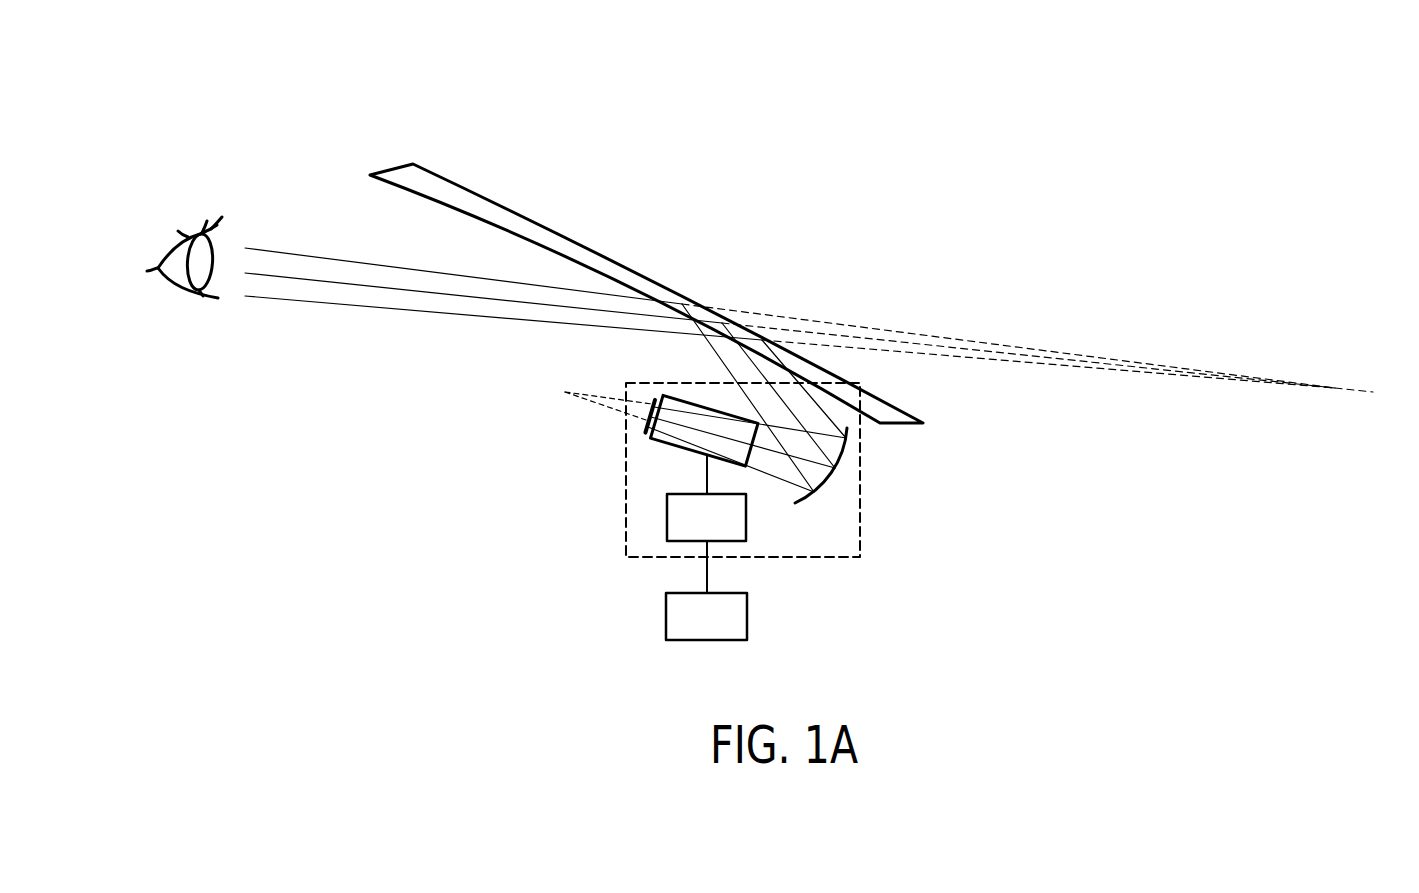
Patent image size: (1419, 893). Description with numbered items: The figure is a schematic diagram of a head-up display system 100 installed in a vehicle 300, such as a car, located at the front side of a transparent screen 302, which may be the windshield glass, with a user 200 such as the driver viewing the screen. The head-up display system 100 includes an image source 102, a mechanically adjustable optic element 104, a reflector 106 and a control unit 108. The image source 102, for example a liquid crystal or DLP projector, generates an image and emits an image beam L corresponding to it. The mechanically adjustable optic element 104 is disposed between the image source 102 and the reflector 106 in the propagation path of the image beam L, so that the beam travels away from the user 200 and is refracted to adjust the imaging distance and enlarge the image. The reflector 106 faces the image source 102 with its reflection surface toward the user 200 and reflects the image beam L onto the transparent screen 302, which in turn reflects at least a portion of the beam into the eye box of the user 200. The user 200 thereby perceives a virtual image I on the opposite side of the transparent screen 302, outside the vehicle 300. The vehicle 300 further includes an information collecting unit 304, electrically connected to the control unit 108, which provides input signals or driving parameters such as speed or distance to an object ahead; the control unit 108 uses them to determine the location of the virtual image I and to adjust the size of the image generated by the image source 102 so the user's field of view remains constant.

The head-up display system 100 is at (642, 560).
The image source 102 is at (650, 410).
The mechanically adjustable optic element 104 is at (654, 441).
The reflector 106 is at (826, 485).
The control unit 108 is at (732, 533).
The user 200 is at (190, 232).
The vehicle 300 is at (1053, 105).
The transparent screen 302 is at (440, 182).
The information collecting unit 304 is at (730, 631).
The virtual image I is at (1037, 359).
The image beam L is at (757, 450).